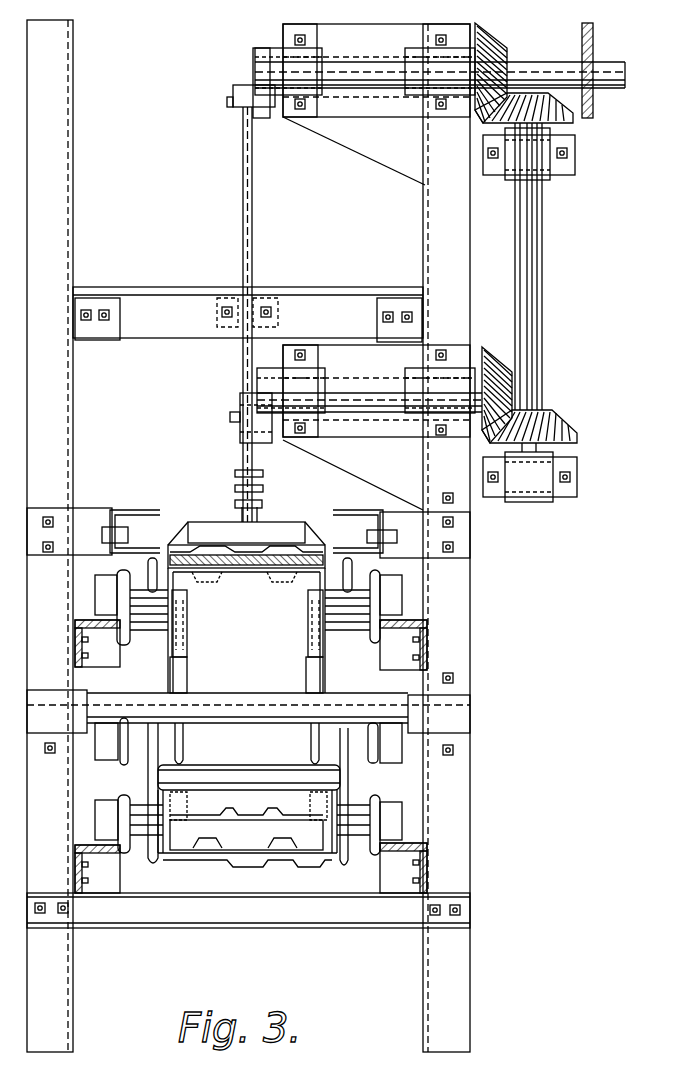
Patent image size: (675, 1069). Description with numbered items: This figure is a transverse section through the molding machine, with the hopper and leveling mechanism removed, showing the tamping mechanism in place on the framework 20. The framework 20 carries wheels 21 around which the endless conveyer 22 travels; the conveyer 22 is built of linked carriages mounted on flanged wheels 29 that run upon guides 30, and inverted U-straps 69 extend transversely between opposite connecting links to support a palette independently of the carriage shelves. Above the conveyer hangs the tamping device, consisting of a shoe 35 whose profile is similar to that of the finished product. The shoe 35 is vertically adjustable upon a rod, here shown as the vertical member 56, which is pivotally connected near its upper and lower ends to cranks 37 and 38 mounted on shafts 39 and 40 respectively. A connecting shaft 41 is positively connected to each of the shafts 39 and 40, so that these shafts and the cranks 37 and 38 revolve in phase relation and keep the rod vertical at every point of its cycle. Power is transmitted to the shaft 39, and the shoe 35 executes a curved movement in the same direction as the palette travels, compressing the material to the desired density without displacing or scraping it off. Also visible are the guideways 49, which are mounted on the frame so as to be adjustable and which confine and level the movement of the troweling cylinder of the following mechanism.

The framework 20 is at (452, 632).
The wheels 21 is at (187, 671).
The endless conveyer 22 is at (152, 858).
The flanged wheels 29 is at (120, 588).
The guides 30 is at (415, 620).
The shoe 35 is at (212, 535).
The crank 37 is at (263, 116).
The crank 38 is at (266, 443).
The shaft 39 is at (375, 75).
The shaft 40 is at (384, 406).
The connecting shaft 41 is at (537, 300).
The guideways 49 is at (147, 547).
The vertical rod 56 is at (253, 210).
The inverted U-straps 69 is at (252, 568).